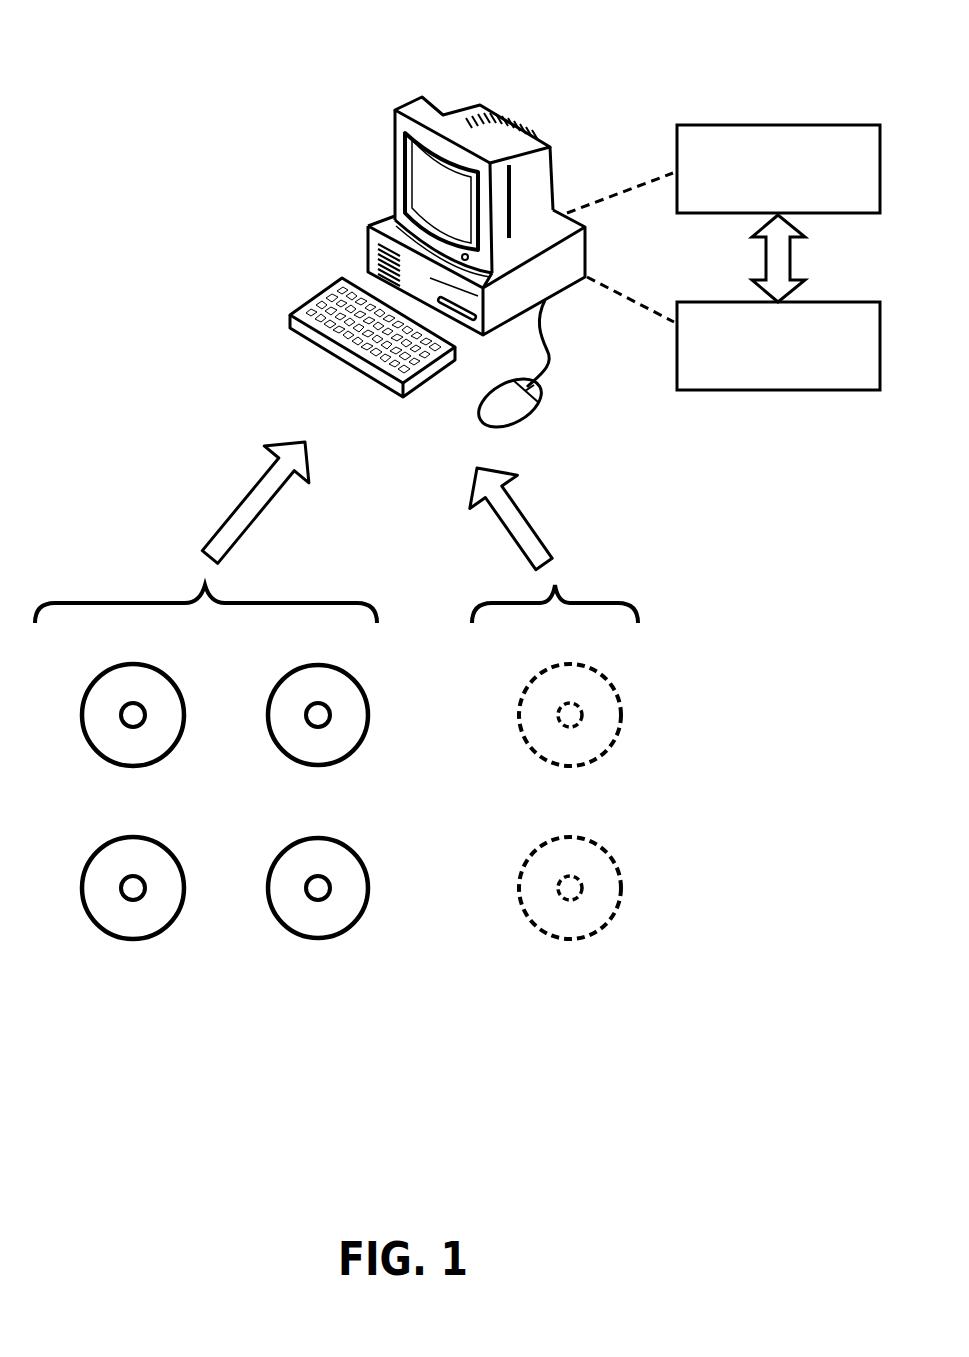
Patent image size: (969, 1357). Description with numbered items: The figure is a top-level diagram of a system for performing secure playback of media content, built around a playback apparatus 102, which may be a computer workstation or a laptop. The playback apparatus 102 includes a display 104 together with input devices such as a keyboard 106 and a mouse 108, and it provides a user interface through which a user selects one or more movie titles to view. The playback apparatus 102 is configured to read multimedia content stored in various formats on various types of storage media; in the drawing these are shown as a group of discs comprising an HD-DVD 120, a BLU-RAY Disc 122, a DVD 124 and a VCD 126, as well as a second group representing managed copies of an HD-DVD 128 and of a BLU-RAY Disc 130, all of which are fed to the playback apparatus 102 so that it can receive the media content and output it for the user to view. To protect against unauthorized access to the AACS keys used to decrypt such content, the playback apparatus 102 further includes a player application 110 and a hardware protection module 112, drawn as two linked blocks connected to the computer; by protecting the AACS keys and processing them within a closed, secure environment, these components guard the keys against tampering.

The playback apparatus 102 is at (478, 42).
The display 104 is at (395, 188).
The keyboard 106 is at (353, 371).
The mouse 108 is at (480, 427).
The player application 110 is at (778, 169).
The hardware protection module 112 is at (778, 346).
The High Definition DVD (HD-DVD) 120 is at (105, 672).
The BLU-RAY Disc 122 is at (105, 843).
The Digital Video Disc (DVD) 124 is at (282, 673).
The video CD (VCD) 126 is at (282, 848).
The managed copy of an HD-DVD 128 is at (542, 673).
The managed copy of a BLU-RAY Disc 130 is at (542, 845).